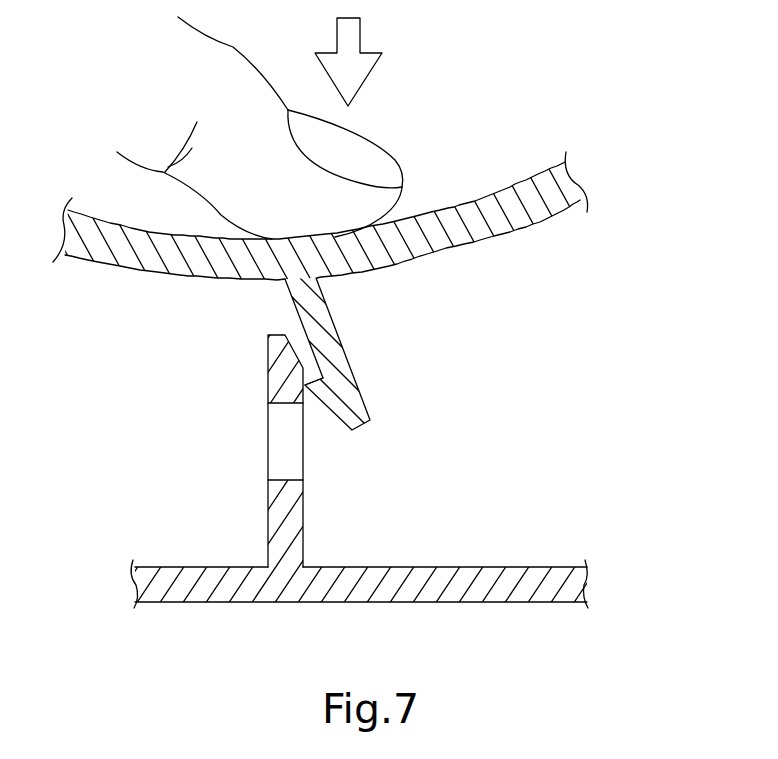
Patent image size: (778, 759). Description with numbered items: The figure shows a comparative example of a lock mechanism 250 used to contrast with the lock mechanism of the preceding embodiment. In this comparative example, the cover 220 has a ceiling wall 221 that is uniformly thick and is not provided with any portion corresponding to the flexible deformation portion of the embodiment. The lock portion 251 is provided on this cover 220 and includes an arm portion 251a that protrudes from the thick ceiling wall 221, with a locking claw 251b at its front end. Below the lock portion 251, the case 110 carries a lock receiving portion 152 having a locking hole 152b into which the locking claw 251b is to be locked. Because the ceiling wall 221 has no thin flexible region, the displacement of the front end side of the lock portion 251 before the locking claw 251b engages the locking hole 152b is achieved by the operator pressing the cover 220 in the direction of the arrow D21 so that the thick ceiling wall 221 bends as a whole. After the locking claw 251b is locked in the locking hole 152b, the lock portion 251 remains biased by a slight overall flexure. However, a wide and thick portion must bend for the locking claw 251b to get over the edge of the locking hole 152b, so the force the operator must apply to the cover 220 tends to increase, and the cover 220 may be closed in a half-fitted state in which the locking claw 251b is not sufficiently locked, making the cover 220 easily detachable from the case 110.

The pressing direction arrow D21 is at (360, 38).
The cover 220 is at (518, 182).
The ceiling wall 221 is at (439, 212).
The lock mechanism 250 is at (400, 391).
The lock portion 251 is at (320, 375).
The arm portion 251a is at (335, 332).
The locking claw 251b is at (326, 420).
The lock receiving portion 152 is at (277, 451).
The locking hole 152b is at (285, 479).
The case 110 is at (397, 504).